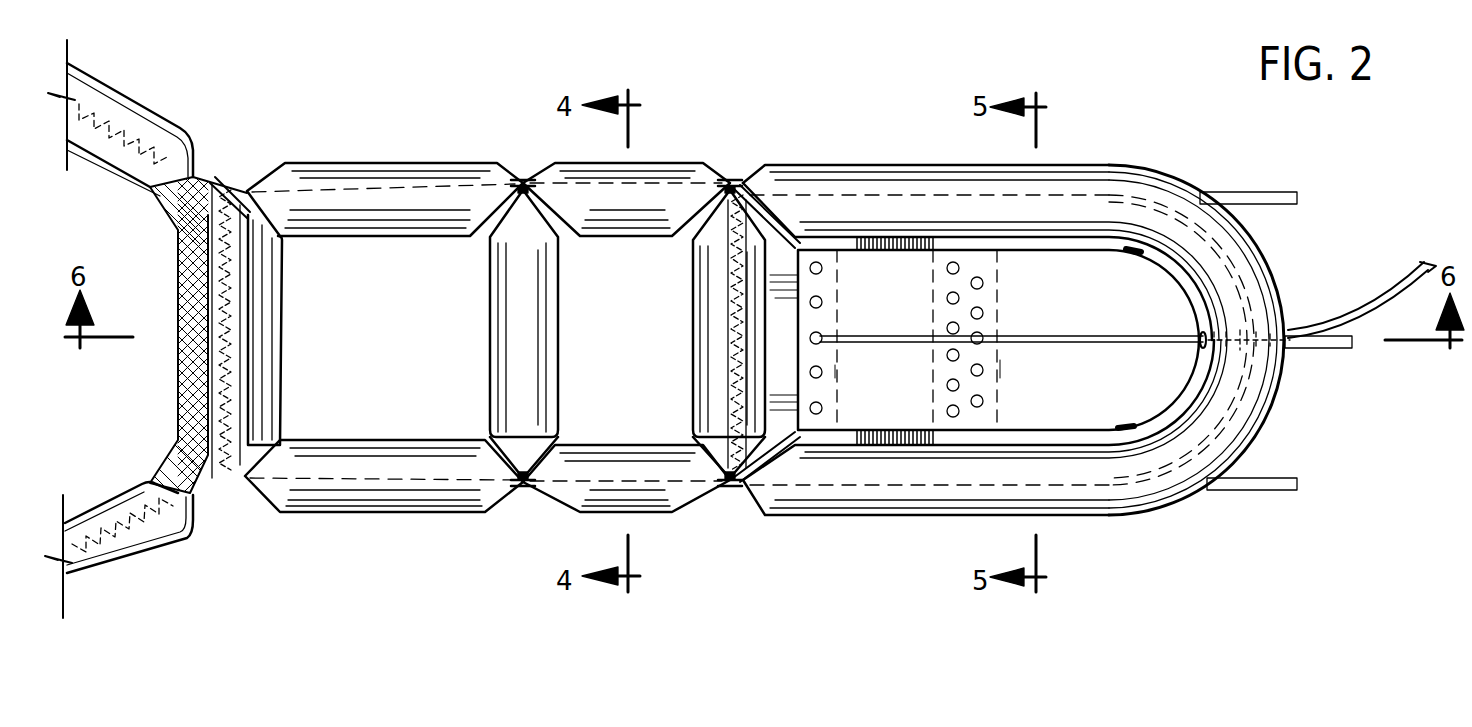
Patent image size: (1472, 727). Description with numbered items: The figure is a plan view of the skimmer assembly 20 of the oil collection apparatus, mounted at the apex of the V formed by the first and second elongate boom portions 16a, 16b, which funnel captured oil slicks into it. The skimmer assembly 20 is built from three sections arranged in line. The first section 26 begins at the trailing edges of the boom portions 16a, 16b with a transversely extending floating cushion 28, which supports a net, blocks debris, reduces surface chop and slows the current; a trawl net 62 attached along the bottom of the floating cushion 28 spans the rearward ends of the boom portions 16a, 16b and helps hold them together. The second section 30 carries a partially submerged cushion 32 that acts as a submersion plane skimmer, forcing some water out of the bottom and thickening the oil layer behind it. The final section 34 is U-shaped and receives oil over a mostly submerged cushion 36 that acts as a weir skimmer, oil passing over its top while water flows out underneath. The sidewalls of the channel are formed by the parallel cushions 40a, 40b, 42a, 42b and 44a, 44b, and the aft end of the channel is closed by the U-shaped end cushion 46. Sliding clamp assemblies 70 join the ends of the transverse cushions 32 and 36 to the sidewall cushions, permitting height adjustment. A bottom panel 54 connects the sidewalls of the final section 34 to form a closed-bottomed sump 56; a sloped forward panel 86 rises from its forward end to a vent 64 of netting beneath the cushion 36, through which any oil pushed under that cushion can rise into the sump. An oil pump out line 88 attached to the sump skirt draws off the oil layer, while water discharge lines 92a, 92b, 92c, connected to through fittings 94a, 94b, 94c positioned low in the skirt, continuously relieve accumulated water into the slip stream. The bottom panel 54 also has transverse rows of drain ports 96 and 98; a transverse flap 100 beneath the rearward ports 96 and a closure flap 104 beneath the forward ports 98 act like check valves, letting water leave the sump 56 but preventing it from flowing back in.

The first elongate boom portion 16a is at (118, 576).
The second elongate boom portion 16b is at (108, 86).
The skimmer assembly 20 is at (1100, 141).
The first section 26 is at (384, 330).
The floating cushion 28 is at (283, 312).
The second section 30 is at (626, 330).
The partially submerged cushion 32 is at (490, 310).
The final section 34 is at (985, 331).
The mostly submerged cushion 36 is at (688, 334).
The sidewall cushion 40a is at (380, 512).
The sidewall cushion 40b is at (405, 178).
The sidewall cushion 42a is at (652, 512).
The sidewall cushion 42b is at (660, 178).
The sidewall floatation cushion 44a is at (910, 515).
The sidewall floatation cushion 44b is at (862, 178).
The U-shaped end cushion 46 is at (1258, 300).
The bottom panel 54 is at (1068, 332).
The closed-bottomed sump 56 is at (1043, 422).
The trawl net 62 is at (178, 380).
The vent 64 is at (733, 348).
The sliding clamp assembly 70 is at (523, 178).
The sloped forward panel 86 is at (782, 347).
The oil pump out line 88 is at (1372, 302).
The water discharge line 92a is at (1270, 480).
The water discharge line 92b is at (1268, 192).
The water discharge line 92c is at (1330, 348).
The through fitting 94a is at (1125, 428).
The through fitting 94b is at (1135, 254).
The through fitting 94c is at (1200, 343).
The drain ports 96 is at (983, 312).
The drain ports 98 is at (823, 340).
The transverse flap 100 is at (1002, 366).
The closure flap 104 is at (837, 373).